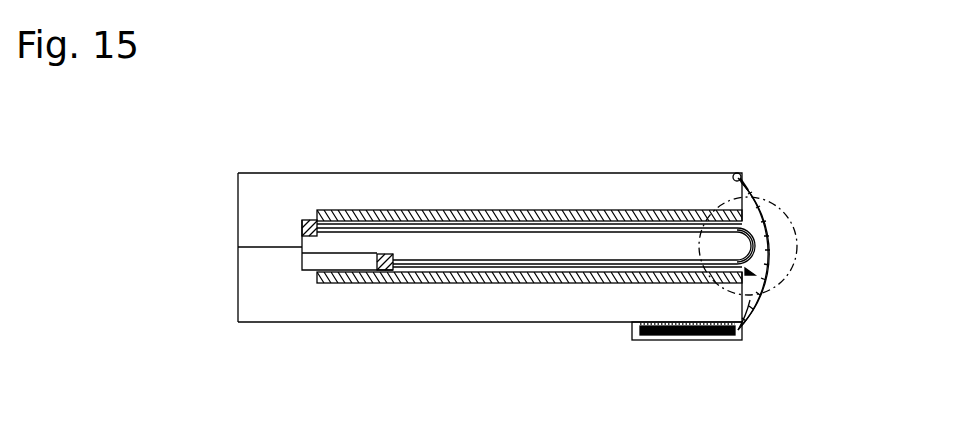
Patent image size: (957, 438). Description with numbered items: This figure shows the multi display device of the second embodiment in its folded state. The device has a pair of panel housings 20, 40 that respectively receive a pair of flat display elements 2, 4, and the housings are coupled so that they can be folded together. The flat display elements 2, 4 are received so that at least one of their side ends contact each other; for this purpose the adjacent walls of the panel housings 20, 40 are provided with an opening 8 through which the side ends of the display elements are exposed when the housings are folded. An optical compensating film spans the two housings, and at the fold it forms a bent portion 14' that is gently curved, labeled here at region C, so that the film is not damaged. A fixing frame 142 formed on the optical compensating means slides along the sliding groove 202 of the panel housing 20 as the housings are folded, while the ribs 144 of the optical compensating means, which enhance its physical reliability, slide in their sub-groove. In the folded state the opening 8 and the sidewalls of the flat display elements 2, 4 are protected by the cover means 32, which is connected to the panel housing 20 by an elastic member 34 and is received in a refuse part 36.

The flat display element 2 is at (438, 284).
The flat display element 4 is at (388, 210).
The opening 8 is at (765, 288).
The bent portion 14' is at (786, 250).
The panel housing 20 is at (567, 322).
The cover means 32 is at (768, 248).
The elastic member 34 is at (667, 340).
The refuse part 36 is at (722, 340).
The panel housing 40 is at (488, 173).
The fixing frame 142 is at (305, 219).
The rib 144 is at (496, 265).
The sliding groove 202 is at (302, 262).
The bend region C is at (697, 247).